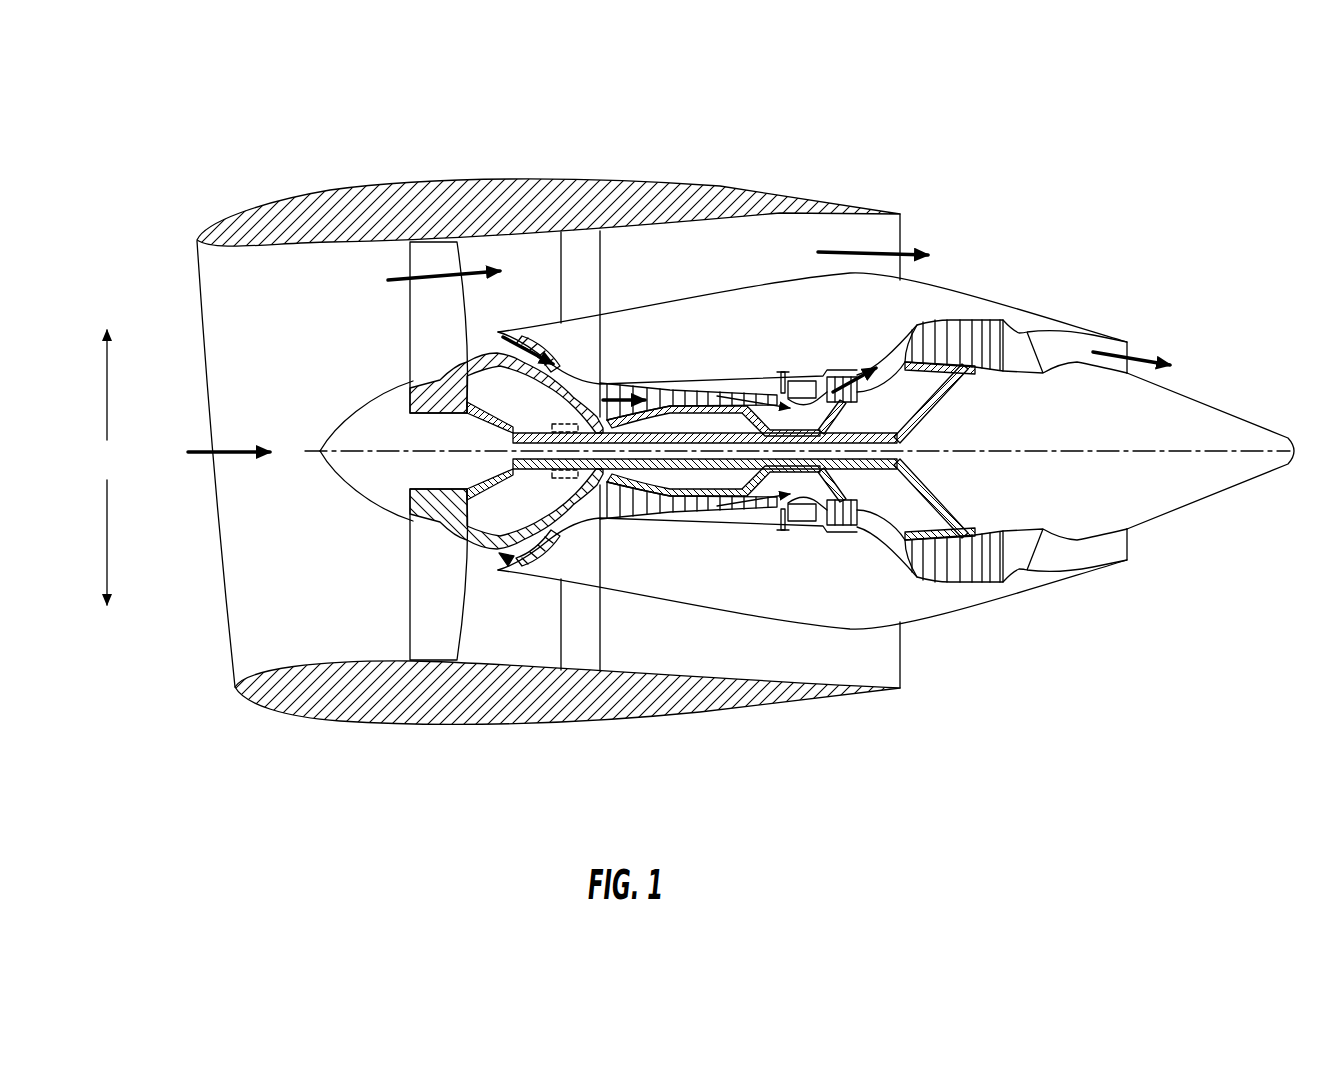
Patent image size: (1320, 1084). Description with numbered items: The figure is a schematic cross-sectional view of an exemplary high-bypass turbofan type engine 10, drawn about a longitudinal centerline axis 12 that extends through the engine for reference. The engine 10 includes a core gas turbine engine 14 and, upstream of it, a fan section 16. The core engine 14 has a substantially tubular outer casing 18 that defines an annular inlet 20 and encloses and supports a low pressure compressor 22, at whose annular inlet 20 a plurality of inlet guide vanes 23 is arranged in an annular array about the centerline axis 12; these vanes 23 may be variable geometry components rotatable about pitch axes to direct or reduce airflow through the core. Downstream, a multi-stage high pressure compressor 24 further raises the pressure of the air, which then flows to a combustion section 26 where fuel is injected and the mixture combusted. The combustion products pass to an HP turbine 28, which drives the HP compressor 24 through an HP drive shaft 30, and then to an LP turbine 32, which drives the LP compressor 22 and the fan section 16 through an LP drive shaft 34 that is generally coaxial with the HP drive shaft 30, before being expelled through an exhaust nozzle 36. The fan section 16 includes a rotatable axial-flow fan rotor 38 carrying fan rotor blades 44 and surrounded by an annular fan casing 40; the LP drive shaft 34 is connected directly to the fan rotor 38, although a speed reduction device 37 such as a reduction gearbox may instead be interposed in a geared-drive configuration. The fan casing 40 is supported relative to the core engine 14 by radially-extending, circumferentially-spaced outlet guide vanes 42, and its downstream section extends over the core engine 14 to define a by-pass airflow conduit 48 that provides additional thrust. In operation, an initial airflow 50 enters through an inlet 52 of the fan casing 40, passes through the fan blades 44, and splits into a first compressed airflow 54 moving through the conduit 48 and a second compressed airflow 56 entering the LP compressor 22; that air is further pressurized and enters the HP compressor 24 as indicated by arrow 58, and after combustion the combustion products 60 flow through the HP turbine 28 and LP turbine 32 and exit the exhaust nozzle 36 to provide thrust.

The high-bypass turbofan type engine 10 is at (696, 442).
The longitudinal or axial centerline axis 12 is at (797, 422).
The core gas turbine engine 14 is at (677, 430).
The fan section 16 is at (548, 395).
The outer casing 18 is at (896, 513).
The annular inlet 20 is at (498, 590).
The low pressure (LP) compressor 22 is at (522, 451).
The inlet guide vanes 23 is at (560, 451).
The multi-stage high pressure (HP) compressor 24 is at (688, 478).
The combustion section 26 is at (772, 480).
The HP turbine 28 is at (872, 451).
The HP drive shaft 30 is at (747, 449).
The LP turbine 32 is at (961, 486).
The LP drive shaft 34 is at (730, 451).
The exhaust nozzle 36 is at (1131, 326).
The speed reduction device 37 is at (554, 426).
The fan rotor 38 is at (461, 451).
The fan casing 40 is at (567, 727).
The outlet guide vanes 42 is at (1065, 477).
The fan rotor blades 44 is at (385, 451).
The by-pass airflow conduit 48 is at (812, 307).
The initial airflow 50 is at (229, 418).
The inlet 52 is at (201, 486).
The first compressed airflow 54 is at (625, 249).
The second compressed airflow 56 is at (518, 322).
The airflow entering the HP compressor 58 is at (624, 359).
The combustion products 60 is at (837, 356).